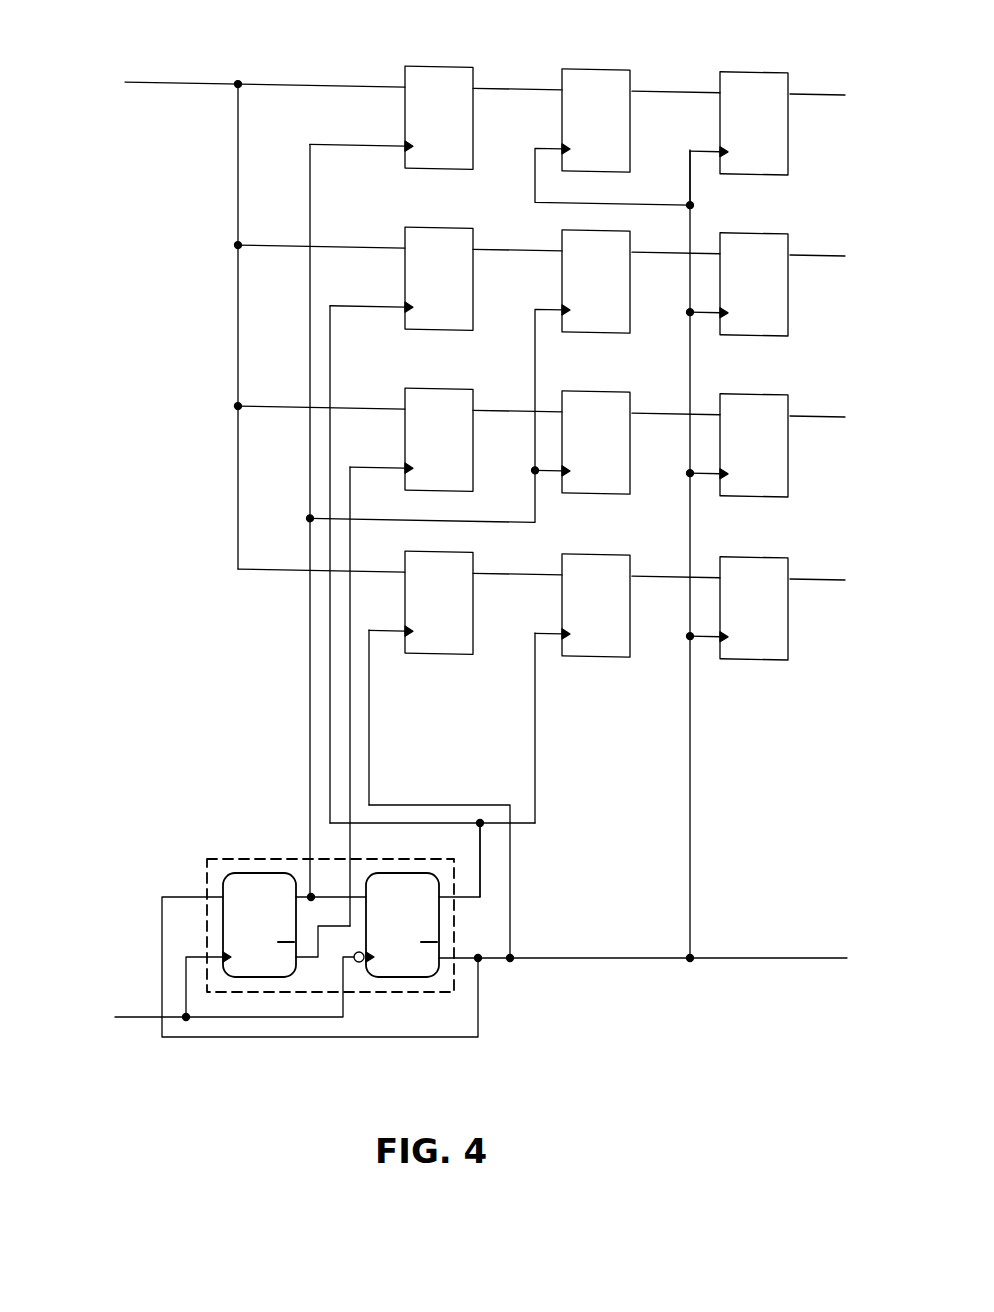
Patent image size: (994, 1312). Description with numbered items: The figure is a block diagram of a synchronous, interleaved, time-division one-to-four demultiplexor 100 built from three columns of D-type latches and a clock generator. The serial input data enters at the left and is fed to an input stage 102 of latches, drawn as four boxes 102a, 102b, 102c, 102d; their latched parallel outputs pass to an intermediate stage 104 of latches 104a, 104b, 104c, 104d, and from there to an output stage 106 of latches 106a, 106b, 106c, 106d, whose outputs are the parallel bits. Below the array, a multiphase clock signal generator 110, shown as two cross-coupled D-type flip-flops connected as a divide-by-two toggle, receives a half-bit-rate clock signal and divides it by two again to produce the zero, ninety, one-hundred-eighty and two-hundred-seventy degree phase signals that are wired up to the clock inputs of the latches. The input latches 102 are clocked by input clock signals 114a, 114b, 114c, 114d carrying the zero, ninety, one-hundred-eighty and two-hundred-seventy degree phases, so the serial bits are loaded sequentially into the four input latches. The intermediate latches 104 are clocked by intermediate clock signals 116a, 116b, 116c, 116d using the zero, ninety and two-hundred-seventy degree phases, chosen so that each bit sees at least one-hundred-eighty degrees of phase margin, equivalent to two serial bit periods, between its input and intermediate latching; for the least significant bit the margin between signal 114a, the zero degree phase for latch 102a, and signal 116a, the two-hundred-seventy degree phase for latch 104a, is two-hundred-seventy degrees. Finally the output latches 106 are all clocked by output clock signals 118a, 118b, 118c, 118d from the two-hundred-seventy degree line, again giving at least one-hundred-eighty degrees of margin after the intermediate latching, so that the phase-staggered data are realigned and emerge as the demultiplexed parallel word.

The demultiplexor 100 is at (694, 1038).
The input stage of latches 102 is at (476, 62).
The input latch 102a is at (474, 139).
The input latch 102b is at (474, 300).
The input latch 102c is at (474, 461).
The input latch 102d is at (474, 624).
The intermediate stage of latches 104 is at (634, 62).
The intermediate latch 104a is at (631, 139).
The intermediate latch 104b is at (631, 300).
The intermediate latch 104c is at (631, 461).
The intermediate latch 104d is at (631, 624).
The output stage of latches 106 is at (797, 63).
The output latch 106a is at (789, 132).
The output latch 106b is at (789, 293).
The output latch 106c is at (789, 454).
The output latch 106d is at (789, 617).
The multiphase clock signal generator 110 is at (395, 995).
The input clock signal 114a is at (376, 146).
The input clock signal 114b is at (377, 305).
The input clock signal 114c is at (377, 466).
The input clock signal 114d is at (385, 630).
The intermediate clock signal 116a is at (546, 146).
The intermediate clock signal 116b is at (545, 307).
The intermediate clock signal 116c is at (545, 468).
The intermediate clock signal 116d is at (545, 631).
The output clock signal 118a is at (700, 146).
The output clock signal 118b is at (700, 307).
The output clock signal 118c is at (700, 468).
The output clock signal 118d is at (700, 631).